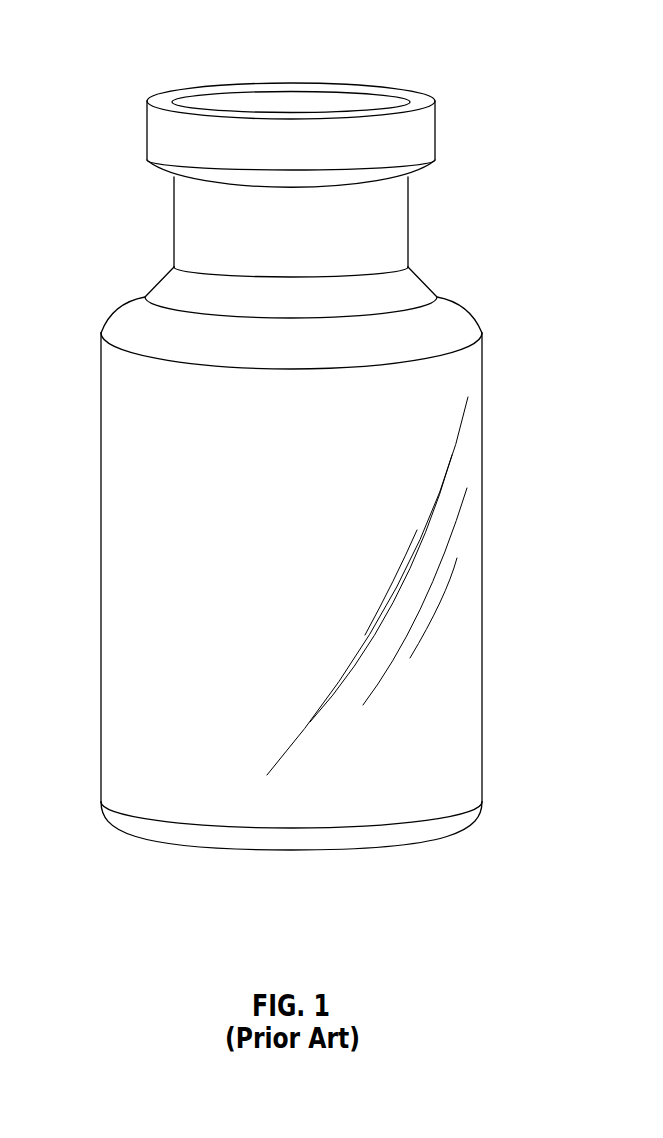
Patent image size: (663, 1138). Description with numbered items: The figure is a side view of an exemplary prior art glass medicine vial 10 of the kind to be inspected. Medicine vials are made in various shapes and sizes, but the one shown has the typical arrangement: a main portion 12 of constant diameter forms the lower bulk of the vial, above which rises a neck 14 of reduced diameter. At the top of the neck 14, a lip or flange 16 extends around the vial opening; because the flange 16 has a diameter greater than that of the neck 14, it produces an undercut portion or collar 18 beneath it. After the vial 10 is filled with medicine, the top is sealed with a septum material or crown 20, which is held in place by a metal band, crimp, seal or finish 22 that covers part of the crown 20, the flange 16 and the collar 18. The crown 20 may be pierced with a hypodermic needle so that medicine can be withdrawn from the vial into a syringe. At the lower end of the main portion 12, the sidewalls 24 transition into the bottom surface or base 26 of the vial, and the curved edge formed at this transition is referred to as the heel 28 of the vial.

The glass medicine vial 10 is at (295, 465).
The main portion 12 is at (295, 594).
The neck 14 is at (174, 217).
The lip or flange 16 is at (305, 111).
The collar 18 is at (417, 172).
The crown 20 is at (363, 93).
The finish 22 is at (150, 138).
The sidewalls 24 is at (104, 554).
The base 26 is at (287, 852).
The heel 28 is at (122, 823).